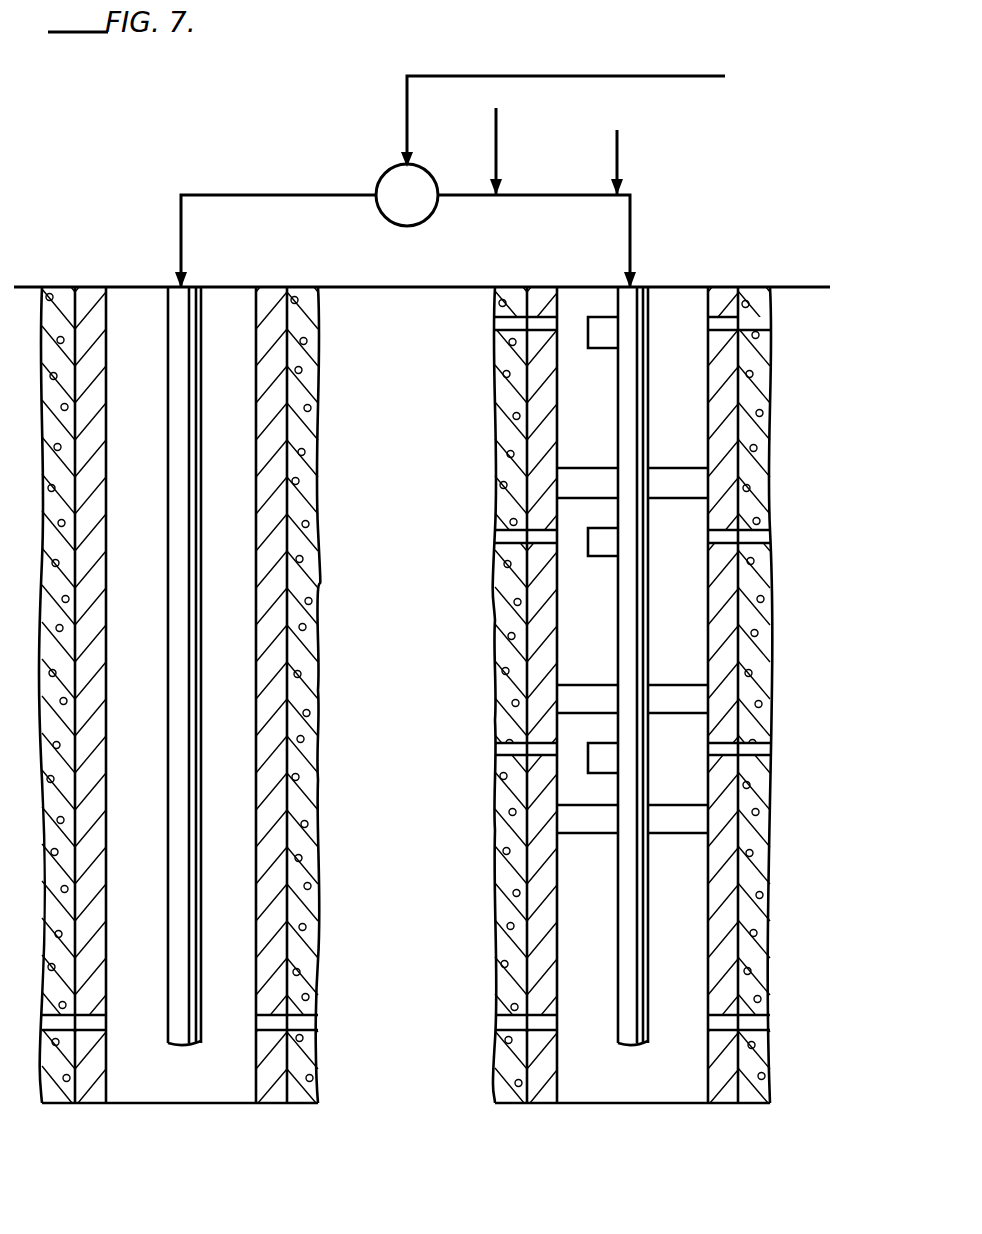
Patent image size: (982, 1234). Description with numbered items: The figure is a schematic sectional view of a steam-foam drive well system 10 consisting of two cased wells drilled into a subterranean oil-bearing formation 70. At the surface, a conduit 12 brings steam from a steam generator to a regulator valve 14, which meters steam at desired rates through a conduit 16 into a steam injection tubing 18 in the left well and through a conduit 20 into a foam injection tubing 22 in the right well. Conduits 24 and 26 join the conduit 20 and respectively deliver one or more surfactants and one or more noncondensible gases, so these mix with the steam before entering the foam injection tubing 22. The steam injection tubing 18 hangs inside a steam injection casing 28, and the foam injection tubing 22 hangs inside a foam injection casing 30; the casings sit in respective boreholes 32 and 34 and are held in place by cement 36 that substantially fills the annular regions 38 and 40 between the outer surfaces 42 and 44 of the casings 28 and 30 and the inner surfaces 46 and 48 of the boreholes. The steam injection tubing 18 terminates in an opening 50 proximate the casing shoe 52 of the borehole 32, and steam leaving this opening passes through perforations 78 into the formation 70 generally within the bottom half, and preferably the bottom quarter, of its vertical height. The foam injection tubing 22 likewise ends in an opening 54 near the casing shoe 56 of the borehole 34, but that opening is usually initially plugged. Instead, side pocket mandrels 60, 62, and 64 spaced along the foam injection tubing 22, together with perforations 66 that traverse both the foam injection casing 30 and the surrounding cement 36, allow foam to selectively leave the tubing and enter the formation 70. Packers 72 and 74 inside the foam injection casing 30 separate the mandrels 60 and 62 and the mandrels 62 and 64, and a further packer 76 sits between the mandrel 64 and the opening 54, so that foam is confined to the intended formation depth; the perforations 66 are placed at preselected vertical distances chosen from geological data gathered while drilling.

The steam-foam drive well system 10 is at (200, 128).
The conduit 12 is at (589, 76).
The regulator valve 14 is at (429, 172).
The conduit 16 is at (181, 225).
The steam injection tubing 18 is at (200, 503).
The conduit 20 is at (632, 236).
The foam injection tubing 22 is at (662, 402).
The conduit 24 is at (499, 160).
The conduit 26 is at (620, 160).
The steam injection casing 28 is at (283, 386).
The foam injection casing 30 is at (735, 442).
The borehole 32 is at (318, 533).
The borehole 34 is at (495, 577).
The cement 36 is at (309, 645).
The annular region 38 is at (310, 725).
The annular region 40 is at (515, 794).
The outer surface 42 is at (293, 298).
The outer surface 44 is at (510, 298).
The inner surface 46 is at (306, 823).
The inner surface 48 is at (505, 867).
The opening 50 is at (197, 1043).
The casing shoe 52 is at (70, 1103).
The opening 54 is at (645, 1043).
The casing shoe 56 is at (521, 1103).
The side pocket mandrel 60 is at (604, 346).
The side pocket mandrel 62 is at (604, 556).
The side pocket mandrel 64 is at (595, 767).
The perforations 66 is at (500, 324).
The subterranean oil-bearing formation 70 is at (420, 955).
The packer 72 is at (703, 486).
The packer 74 is at (700, 698).
The packer 76 is at (697, 822).
The perforations 78 is at (312, 1022).